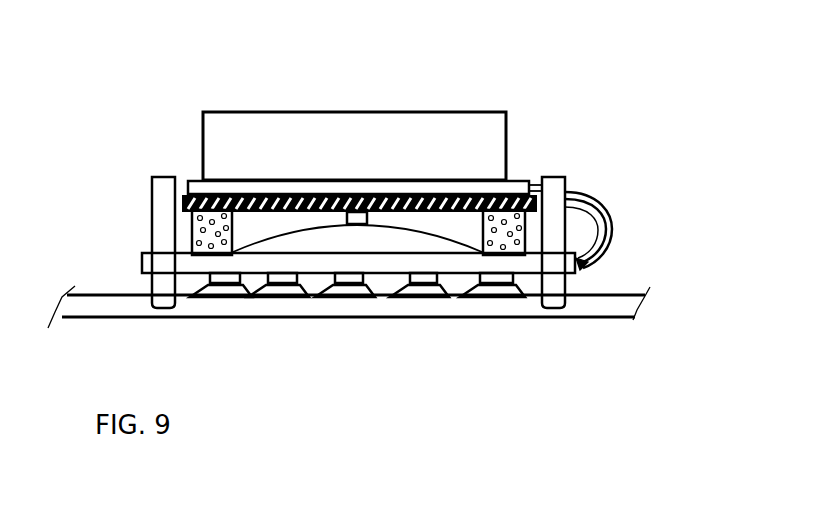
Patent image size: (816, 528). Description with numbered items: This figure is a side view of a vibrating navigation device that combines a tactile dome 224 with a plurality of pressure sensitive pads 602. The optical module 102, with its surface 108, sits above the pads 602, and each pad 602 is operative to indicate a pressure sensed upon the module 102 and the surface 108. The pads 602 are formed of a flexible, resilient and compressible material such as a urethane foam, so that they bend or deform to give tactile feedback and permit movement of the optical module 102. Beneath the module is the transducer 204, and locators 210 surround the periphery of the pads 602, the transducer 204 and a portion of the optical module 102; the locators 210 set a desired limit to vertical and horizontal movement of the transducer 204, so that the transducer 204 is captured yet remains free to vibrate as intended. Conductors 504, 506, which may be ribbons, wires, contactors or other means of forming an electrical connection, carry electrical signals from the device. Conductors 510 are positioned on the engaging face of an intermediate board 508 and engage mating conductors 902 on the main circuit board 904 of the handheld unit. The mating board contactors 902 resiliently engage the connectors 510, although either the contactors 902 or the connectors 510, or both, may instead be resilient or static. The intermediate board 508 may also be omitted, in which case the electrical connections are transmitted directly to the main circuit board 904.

The optical module 102 is at (474, 92).
The surface 108 is at (392, 112).
The transducer 204 is at (212, 198).
The locator 210 is at (152, 193).
The tactile dome 224 is at (317, 240).
The conductor 504 is at (583, 235).
The conductor 506 is at (612, 226).
The intermediate board 508 is at (566, 283).
The conductor 510 is at (424, 272).
The pressure sensitive pad 602 is at (192, 240).
The mating board contactor 902 is at (248, 280).
The main circuit board 904 is at (82, 311).